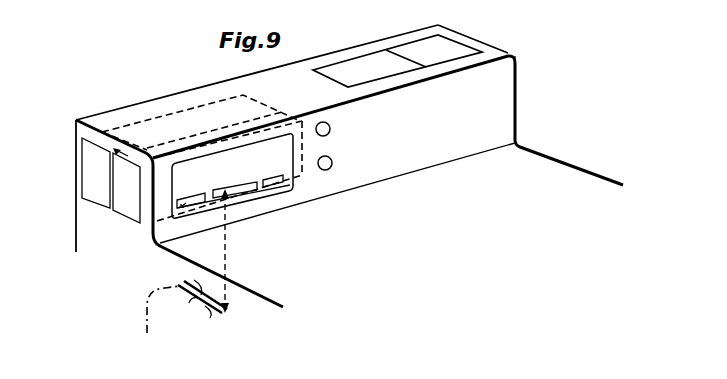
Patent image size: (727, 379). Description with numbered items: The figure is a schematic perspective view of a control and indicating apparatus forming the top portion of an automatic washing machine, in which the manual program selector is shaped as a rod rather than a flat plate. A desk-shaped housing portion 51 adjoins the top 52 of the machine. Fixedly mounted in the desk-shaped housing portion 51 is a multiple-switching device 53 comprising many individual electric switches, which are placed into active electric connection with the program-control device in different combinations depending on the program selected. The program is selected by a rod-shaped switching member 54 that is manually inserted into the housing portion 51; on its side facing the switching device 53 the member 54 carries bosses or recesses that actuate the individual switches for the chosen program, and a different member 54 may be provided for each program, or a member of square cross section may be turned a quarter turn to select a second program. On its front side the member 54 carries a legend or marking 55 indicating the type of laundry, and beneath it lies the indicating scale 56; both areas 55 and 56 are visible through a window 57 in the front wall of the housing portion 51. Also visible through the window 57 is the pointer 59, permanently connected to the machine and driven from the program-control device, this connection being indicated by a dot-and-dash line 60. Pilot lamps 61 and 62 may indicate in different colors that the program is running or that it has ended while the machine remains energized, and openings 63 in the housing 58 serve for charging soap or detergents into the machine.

The desk-shaped housing portion 51 is at (300, 80).
The top of the machine 52 is at (522, 170).
The multiple-switching device 53 is at (97, 165).
The rod-shaped switching member 54 is at (128, 188).
The legend or marking 55 is at (218, 157).
The indicating scale 56 is at (173, 220).
The window 57 is at (296, 167).
The housing 58 is at (487, 107).
The pointer 59 is at (227, 240).
The dot-and-dash line 60 is at (147, 317).
The pilot lamp 61 is at (331, 127).
The pilot lamp 62 is at (333, 162).
The openings 63 is at (408, 53).